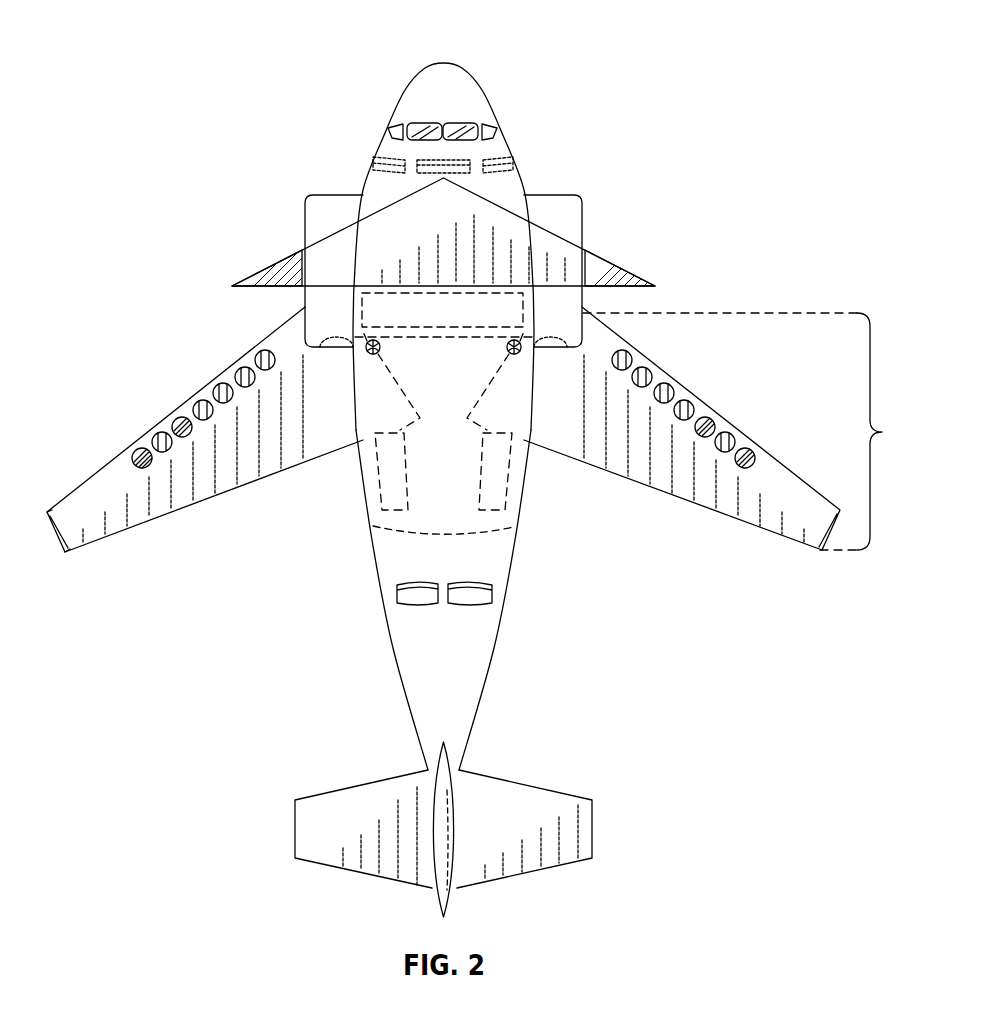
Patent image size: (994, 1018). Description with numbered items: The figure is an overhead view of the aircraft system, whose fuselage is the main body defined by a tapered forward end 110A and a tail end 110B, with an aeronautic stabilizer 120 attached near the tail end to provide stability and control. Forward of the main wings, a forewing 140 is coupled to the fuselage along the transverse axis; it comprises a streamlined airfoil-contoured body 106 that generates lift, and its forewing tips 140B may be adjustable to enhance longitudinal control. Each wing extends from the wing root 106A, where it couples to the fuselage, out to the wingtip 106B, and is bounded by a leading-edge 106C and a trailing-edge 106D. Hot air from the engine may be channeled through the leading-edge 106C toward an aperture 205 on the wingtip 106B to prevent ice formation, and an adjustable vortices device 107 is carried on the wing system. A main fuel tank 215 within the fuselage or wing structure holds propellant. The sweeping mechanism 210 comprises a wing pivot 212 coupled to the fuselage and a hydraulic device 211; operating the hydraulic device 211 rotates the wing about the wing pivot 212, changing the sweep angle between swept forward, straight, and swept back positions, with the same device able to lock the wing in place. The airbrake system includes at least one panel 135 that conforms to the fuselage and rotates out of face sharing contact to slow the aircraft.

The forward end 110A is at (443, 70).
The tail end 110B is at (460, 738).
The panel 135 is at (515, 163).
The forewing 140 is at (335, 240).
The forewing tips 140B is at (255, 276).
The main fuel tank 215 is at (493, 312).
The wing pivot 212 is at (522, 345).
The wing root 106A is at (485, 388).
The hydraulic device 211 is at (503, 500).
The leading-edge 106C is at (152, 430).
The trailing-edge 106D is at (202, 502).
The streamlined airfoil-contoured body 106 is at (120, 518).
The wingtip 106B is at (827, 523).
The adjustable vortices device 107 is at (205, 392).
The aperture 205 is at (128, 453).
The sweeping mechanism 210 is at (759, 431).
The aeronautic stabilizer 120 is at (317, 847).